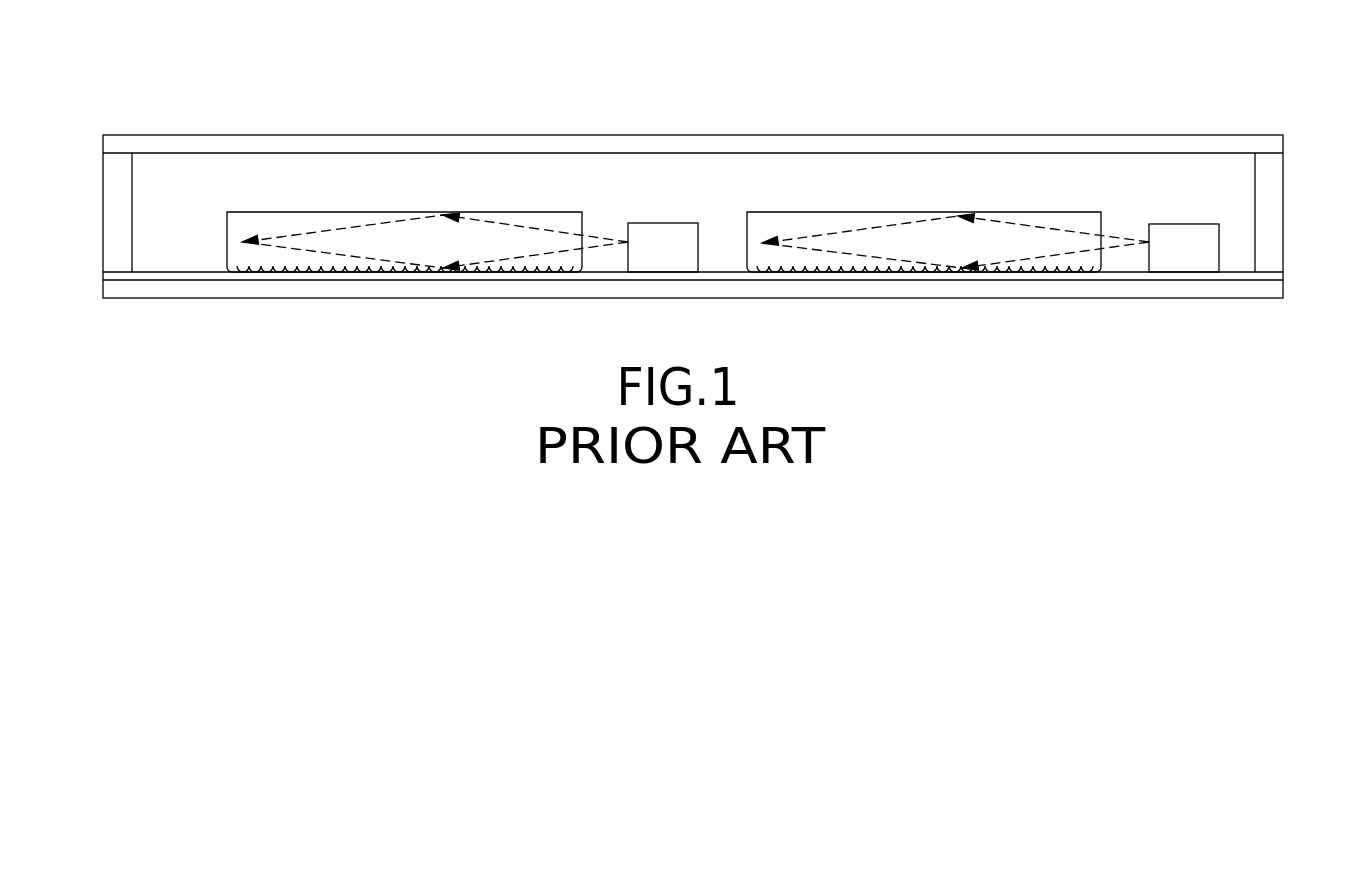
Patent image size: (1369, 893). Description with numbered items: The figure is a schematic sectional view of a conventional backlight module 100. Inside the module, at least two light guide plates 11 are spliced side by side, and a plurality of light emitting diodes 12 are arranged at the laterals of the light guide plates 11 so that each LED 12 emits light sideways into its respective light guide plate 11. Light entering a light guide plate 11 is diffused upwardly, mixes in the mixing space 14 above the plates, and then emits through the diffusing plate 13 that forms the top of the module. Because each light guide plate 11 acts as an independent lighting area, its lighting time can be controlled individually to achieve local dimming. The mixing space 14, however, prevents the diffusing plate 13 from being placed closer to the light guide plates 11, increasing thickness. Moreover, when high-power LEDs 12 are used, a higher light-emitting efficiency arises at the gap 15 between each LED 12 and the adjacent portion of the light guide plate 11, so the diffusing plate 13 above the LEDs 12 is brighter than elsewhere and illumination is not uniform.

The backlight module 100 is at (660, 31).
The light guide plate 11 is at (427, 232).
The light emitting diode 12 is at (661, 238).
The diffusing plate 13 is at (1115, 142).
The mixing space 14 is at (748, 172).
The gap 15 is at (605, 255).